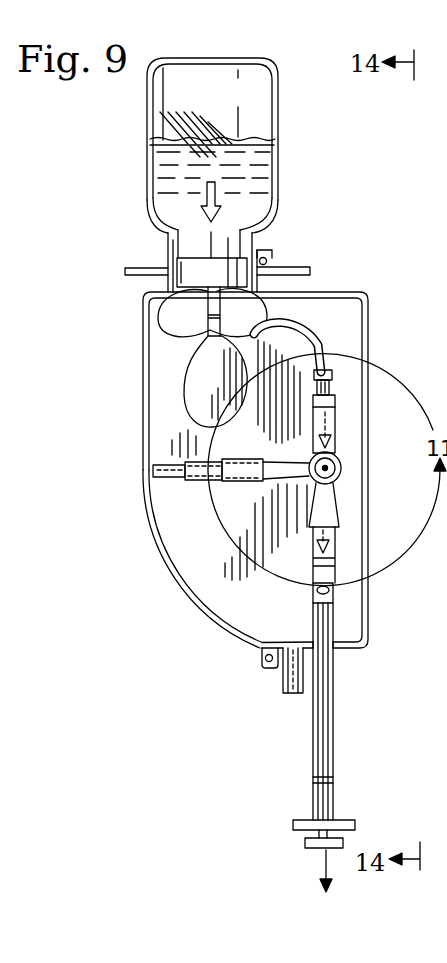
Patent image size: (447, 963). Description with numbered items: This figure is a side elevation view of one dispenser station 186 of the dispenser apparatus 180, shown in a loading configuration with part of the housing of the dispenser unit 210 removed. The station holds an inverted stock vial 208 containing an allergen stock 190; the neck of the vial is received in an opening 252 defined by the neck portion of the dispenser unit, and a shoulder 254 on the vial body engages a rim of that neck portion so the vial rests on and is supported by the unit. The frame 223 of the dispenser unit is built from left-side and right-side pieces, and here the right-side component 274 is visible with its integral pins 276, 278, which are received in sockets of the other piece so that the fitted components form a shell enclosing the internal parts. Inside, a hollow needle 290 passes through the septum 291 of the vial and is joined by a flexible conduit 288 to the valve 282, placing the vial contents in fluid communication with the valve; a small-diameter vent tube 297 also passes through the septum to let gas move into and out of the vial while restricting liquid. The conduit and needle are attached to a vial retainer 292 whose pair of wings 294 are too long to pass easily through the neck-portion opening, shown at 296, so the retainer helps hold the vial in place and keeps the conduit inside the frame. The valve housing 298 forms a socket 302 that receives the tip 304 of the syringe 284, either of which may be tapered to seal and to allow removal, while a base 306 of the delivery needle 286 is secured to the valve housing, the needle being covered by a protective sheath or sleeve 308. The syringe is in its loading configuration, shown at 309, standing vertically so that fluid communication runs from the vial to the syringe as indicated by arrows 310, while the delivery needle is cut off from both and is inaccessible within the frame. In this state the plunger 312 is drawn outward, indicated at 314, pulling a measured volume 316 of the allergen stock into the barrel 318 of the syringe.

The dispenser apparatus 180 is at (70, 695).
The dispenser station 186 is at (104, 600).
The allergen stock 190 is at (146, 168).
The stock vial 208 is at (148, 116).
The dispenser unit 210 is at (160, 607).
The frame 223 is at (200, 622).
The opening 252 is at (248, 298).
The shoulder 254 is at (233, 252).
The right-side component 274 is at (230, 642).
The integral pin 276 is at (268, 261).
The integral pin 278 is at (268, 663).
The valve 282 is at (350, 447).
The syringe 284 is at (340, 729).
The delivery needle 286 is at (203, 477).
The flexible conduit 288 is at (184, 385).
The hollow needle 290 is at (213, 251).
The septum 291 is at (192, 271).
The vial retainer 292 is at (152, 302).
The wings 294 is at (168, 318).
The opening of the neck portion 296 is at (276, 305).
The vent tube 297 is at (236, 254).
The valve housing 298 is at (342, 477).
The socket 302 is at (334, 533).
The tip 304 is at (331, 505).
The base 306 is at (247, 474).
The sheath or sleeve 308 is at (213, 458).
The loading configuration 309 is at (352, 676).
The arrows 310 is at (312, 428).
The plunger 312 is at (328, 772).
The outward plunger movement 314 is at (323, 867).
The measured volume 316 is at (338, 579).
The barrel 318 is at (337, 624).